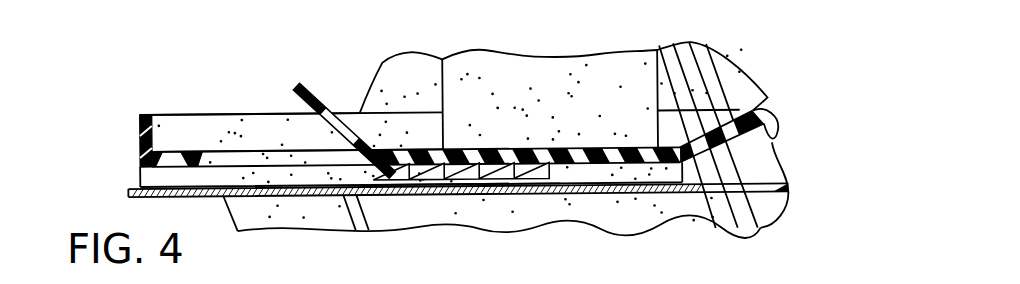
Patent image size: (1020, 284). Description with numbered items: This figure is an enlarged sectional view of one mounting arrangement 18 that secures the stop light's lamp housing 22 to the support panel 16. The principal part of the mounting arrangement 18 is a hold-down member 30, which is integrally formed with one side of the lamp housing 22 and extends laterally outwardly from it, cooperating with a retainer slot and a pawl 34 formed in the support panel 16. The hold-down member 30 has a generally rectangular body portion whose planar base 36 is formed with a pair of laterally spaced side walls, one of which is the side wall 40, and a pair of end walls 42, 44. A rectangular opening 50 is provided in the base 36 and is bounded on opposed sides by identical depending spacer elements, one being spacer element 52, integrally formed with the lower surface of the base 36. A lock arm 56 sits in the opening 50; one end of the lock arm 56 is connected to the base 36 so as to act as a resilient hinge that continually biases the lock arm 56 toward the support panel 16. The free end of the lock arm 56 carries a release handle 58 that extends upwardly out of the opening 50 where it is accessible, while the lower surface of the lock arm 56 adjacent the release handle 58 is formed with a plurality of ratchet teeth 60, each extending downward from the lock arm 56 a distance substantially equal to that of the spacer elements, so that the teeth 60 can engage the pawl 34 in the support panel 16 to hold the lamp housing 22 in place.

The support panel 16 is at (197, 198).
The mounting arrangement 18 is at (303, 71).
The lamp housing 22 is at (462, 100).
The hold-down member 30 is at (163, 114).
The pawl 34 is at (462, 188).
The planar base 36 is at (603, 150).
The side wall 40 is at (251, 125).
The end wall 42 is at (140, 128).
The end wall 44 is at (773, 143).
The rectangular opening 50 is at (217, 153).
The spacer element 52 is at (148, 180).
The lock arm 56 is at (579, 152).
The release handle 58 is at (320, 95).
The ratchet teeth 60 is at (455, 178).